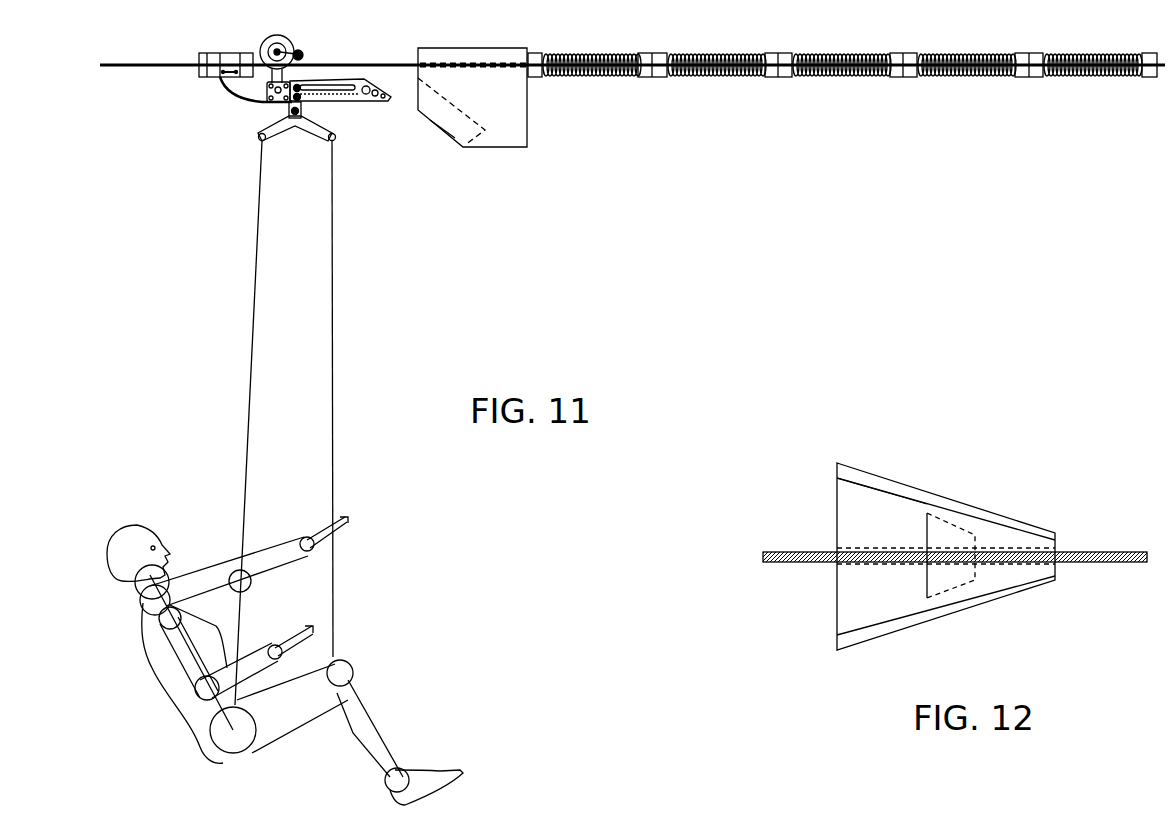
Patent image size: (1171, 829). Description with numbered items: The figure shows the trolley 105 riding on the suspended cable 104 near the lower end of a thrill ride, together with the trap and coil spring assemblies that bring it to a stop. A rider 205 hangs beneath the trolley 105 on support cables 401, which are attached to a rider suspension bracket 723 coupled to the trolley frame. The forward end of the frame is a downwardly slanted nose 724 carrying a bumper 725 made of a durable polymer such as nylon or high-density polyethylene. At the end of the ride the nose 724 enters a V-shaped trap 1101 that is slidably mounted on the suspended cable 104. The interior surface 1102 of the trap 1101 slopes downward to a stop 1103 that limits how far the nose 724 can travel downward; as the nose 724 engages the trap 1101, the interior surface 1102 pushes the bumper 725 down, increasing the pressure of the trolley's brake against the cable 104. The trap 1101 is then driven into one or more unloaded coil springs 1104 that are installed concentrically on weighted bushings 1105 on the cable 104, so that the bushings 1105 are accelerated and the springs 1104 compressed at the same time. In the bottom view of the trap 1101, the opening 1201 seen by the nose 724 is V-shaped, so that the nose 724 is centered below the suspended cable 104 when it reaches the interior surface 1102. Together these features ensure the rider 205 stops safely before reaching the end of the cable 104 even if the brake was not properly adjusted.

In FIG. 11, the suspended cable 104 is at (172, 67).
In FIG. 12, the suspended cable 104 is at (783, 563).
In FIG. 11, the trolley 105 is at (236, 106).
In FIG. 11, the rider suspension bracket 723 is at (276, 133).
In FIG. 11, the downwardly slanted nose 724 is at (364, 100).
In FIG. 11, the bumper 725 is at (388, 86).
In FIG. 11, the support cables 401 is at (332, 455).
In FIG. 11, the rider 205 is at (180, 718).
In FIG. 11, the V-shaped trap 1101 is at (506, 113).
In FIG. 12, the V-shaped trap 1101 is at (991, 523).
In FIG. 11, the interior surface 1102 is at (449, 108).
In FIG. 11, the stop 1103 is at (470, 131).
In FIG. 11, the coil springs 1104 is at (697, 77).
In FIG. 11, the weighted bushings 1105 is at (910, 77).
In FIG. 12, the opening 1201 is at (855, 490).